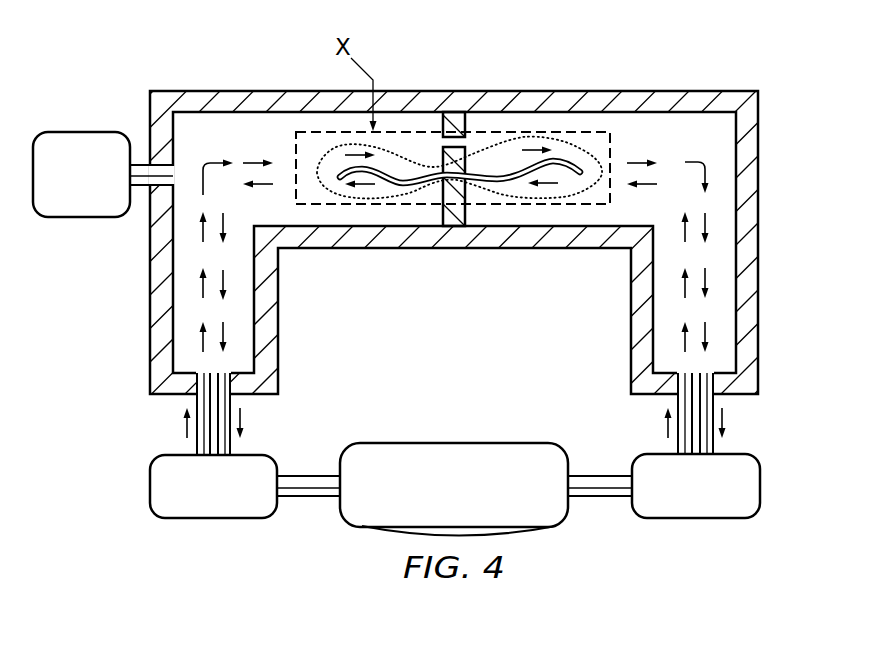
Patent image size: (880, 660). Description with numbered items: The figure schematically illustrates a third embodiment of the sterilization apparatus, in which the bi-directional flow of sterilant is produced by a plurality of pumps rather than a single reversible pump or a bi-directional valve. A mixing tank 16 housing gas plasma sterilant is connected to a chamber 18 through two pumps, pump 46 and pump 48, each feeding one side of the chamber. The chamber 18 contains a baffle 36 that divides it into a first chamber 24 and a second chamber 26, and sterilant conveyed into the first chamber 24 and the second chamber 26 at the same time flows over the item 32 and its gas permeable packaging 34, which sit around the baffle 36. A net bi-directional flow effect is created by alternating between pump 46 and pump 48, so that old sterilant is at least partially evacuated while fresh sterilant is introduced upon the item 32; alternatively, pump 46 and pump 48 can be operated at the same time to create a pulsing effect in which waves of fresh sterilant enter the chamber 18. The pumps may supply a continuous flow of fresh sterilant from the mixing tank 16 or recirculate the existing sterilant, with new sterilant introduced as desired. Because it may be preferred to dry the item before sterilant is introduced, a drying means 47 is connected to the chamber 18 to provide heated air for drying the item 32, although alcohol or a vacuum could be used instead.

The mixing tank 16 is at (380, 534).
The chamber 18 is at (569, 82).
The first chamber 24 is at (217, 151).
The second chamber 26 is at (721, 150).
The item 32 is at (560, 160).
The gas permeable packaging 34 is at (337, 149).
The baffle 36 is at (443, 217).
The pump 46 is at (217, 518).
The drying means 47 is at (75, 132).
The pump 48 is at (695, 519).